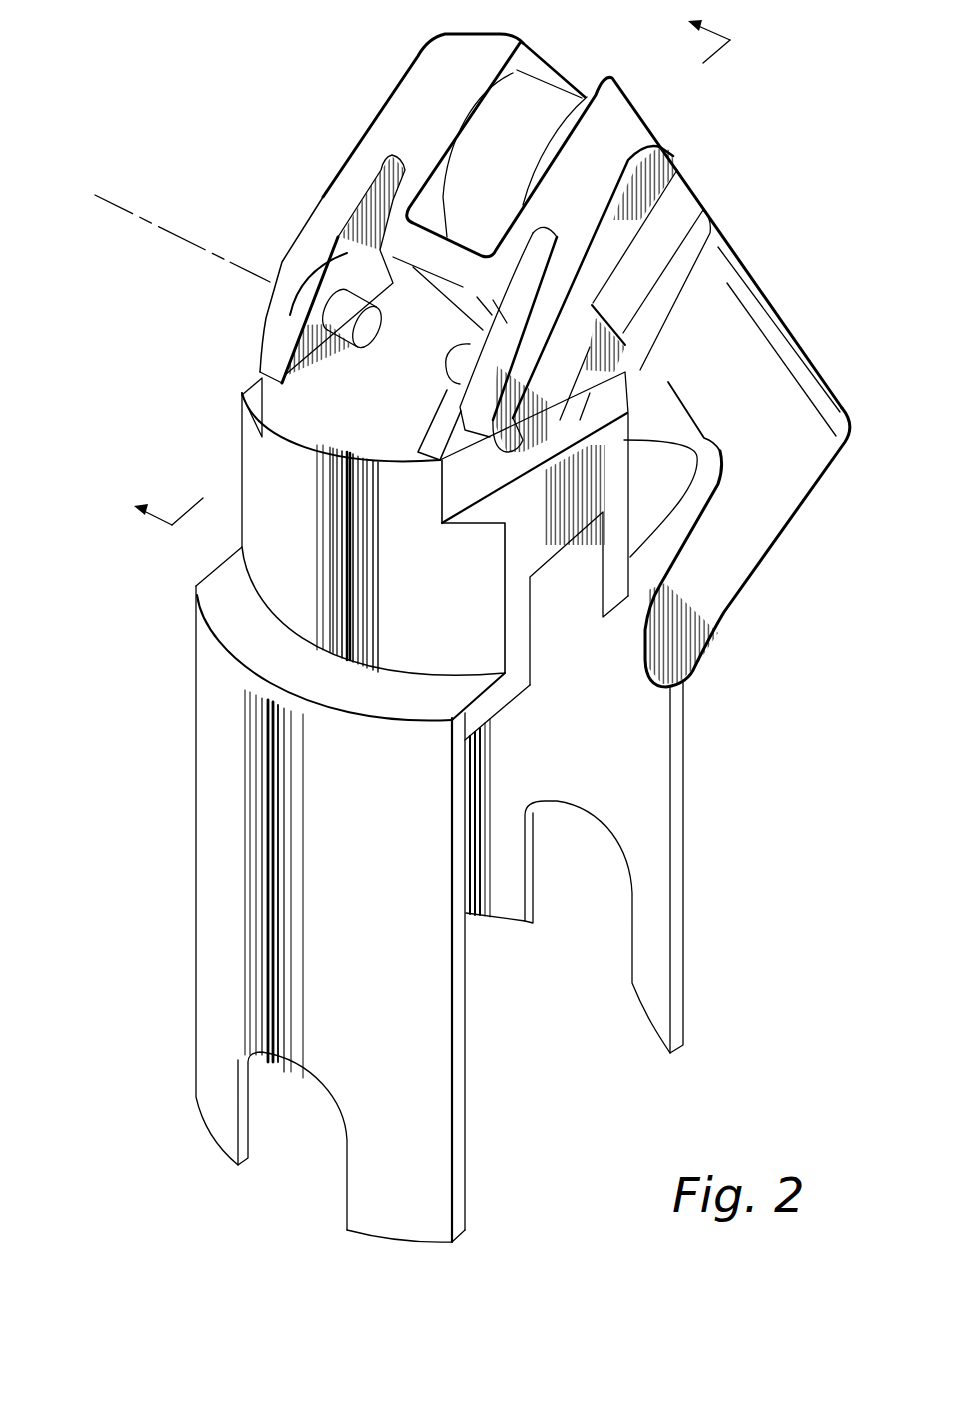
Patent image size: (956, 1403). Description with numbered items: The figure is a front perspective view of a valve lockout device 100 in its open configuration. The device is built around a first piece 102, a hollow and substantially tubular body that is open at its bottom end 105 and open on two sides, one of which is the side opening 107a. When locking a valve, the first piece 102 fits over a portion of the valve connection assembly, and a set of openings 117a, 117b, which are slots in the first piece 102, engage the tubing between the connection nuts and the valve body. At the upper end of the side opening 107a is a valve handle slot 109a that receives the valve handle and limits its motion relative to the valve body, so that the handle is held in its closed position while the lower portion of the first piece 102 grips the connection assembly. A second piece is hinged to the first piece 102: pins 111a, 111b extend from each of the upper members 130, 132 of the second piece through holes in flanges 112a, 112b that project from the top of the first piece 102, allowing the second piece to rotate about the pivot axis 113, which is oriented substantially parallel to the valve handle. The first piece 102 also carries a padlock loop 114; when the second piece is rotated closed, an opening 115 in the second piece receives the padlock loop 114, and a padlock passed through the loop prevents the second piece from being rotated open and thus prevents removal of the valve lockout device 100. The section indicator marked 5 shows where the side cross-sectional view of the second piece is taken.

The valve lockout device 100 is at (158, 927).
The first piece 102 is at (677, 905).
The bottom end 105 is at (458, 1235).
The side opening 107a is at (562, 1074).
The valve handle slot 109a is at (578, 550).
The pin 111a is at (364, 335).
The pin 111b is at (450, 367).
The flange 112a is at (275, 362).
The flange 112b is at (443, 432).
The pivot axis 113 is at (173, 232).
The padlock loop 114 is at (553, 97).
The opening 115 is at (521, 52).
The opening 117a is at (318, 1092).
The opening 117b is at (603, 827).
The upper member 130 is at (383, 130).
The upper member 132 is at (593, 280).
The section line 5 is at (421, 265).